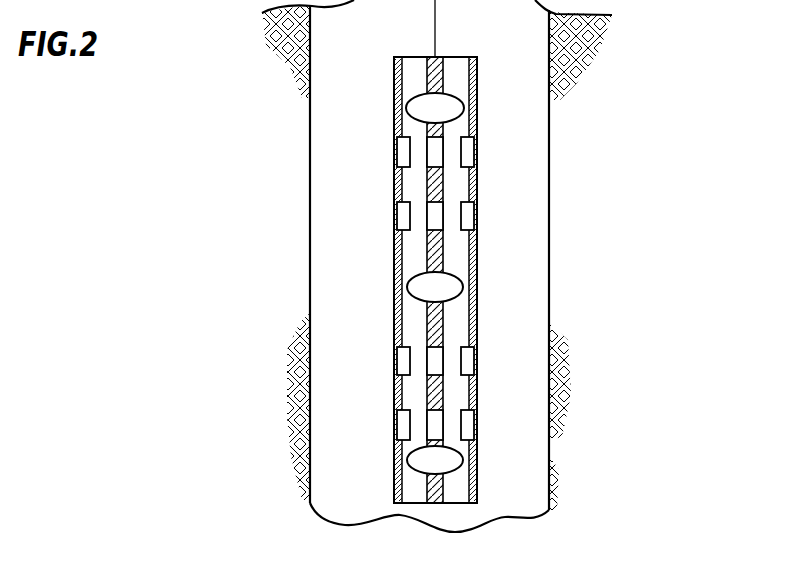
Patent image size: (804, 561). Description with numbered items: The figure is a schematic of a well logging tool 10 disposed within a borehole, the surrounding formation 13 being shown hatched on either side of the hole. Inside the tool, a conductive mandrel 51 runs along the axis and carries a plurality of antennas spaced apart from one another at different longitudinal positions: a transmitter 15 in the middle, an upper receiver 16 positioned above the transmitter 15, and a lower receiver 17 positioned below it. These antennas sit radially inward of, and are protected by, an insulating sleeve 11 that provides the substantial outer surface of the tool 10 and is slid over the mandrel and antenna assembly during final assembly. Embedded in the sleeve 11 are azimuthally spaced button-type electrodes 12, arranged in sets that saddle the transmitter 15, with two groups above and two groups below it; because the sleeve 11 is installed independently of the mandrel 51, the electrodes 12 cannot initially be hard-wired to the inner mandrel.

The well logging tool 10 is at (495, 128).
The insulating sleeve 11 is at (476, 253).
The button electrodes 12 is at (474, 153).
The formation / borehole wall 13 is at (310, 349).
The transmitter 15 is at (423, 282).
The upper receiver 16 is at (420, 108).
The lower receiver 17 is at (428, 460).
The conductive mandrel 51 is at (427, 190).